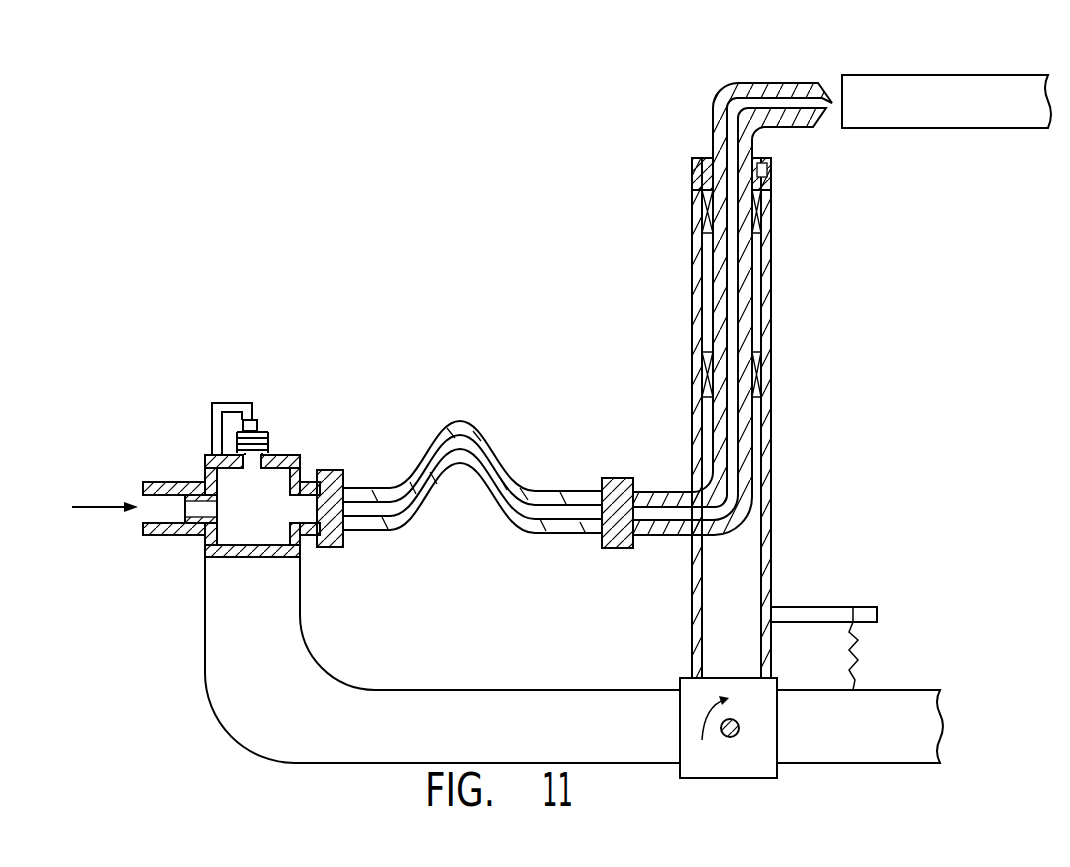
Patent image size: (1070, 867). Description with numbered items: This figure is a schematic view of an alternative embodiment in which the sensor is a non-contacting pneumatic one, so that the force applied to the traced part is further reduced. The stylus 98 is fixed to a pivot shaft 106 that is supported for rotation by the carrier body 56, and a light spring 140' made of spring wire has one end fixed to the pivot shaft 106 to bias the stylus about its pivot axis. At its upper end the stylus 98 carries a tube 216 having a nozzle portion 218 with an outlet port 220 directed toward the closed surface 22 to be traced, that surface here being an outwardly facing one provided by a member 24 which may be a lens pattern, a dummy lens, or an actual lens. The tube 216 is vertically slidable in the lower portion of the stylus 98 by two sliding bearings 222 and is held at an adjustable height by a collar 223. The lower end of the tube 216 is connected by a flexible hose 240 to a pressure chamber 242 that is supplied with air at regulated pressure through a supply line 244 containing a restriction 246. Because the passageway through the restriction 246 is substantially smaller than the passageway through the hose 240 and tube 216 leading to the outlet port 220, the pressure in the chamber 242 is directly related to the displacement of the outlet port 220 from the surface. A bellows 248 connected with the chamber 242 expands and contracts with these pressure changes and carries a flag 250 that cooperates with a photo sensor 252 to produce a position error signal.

The closed surface 22 is at (838, 120).
The member 24 is at (927, 74).
The carrier body 56 is at (848, 745).
The stylus 98 is at (771, 303).
The pivot shaft 106 is at (740, 733).
The spring 140' is at (849, 648).
The tube 216 is at (717, 99).
The nozzle portion 218 is at (790, 86).
The outlet port 220 is at (827, 89).
The sliding bearings 222 is at (762, 204).
The collar 223 is at (692, 175).
The flexible hose 240 is at (503, 455).
The pressure chamber 242 is at (250, 528).
The supply line 244 is at (168, 528).
The restriction 246 is at (190, 532).
The bellows 248 is at (270, 441).
The flag 250 is at (256, 425).
The photo sensor 252 is at (246, 410).